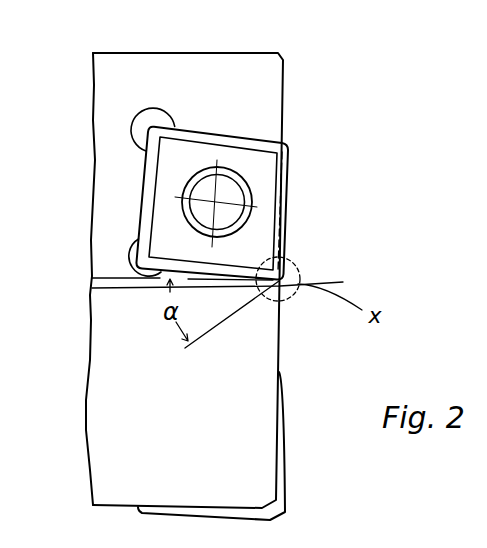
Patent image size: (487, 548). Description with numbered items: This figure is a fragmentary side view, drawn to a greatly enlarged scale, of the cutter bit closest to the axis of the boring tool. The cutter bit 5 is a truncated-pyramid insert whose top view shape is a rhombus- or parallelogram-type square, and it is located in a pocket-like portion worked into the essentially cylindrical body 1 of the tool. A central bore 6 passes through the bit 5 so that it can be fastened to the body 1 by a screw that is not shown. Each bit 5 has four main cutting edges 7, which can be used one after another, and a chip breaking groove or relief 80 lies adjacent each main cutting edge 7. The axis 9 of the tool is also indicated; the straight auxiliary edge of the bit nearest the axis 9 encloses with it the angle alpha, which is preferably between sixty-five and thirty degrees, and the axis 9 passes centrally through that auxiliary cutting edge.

The body 1 is at (260, 70).
The cutter bit 5 is at (245, 158).
The central bore 6 is at (225, 195).
The main cutting edge 7 is at (288, 210).
The axis of the tool 9 is at (300, 278).
The chip breaking groove 80 is at (193, 135).